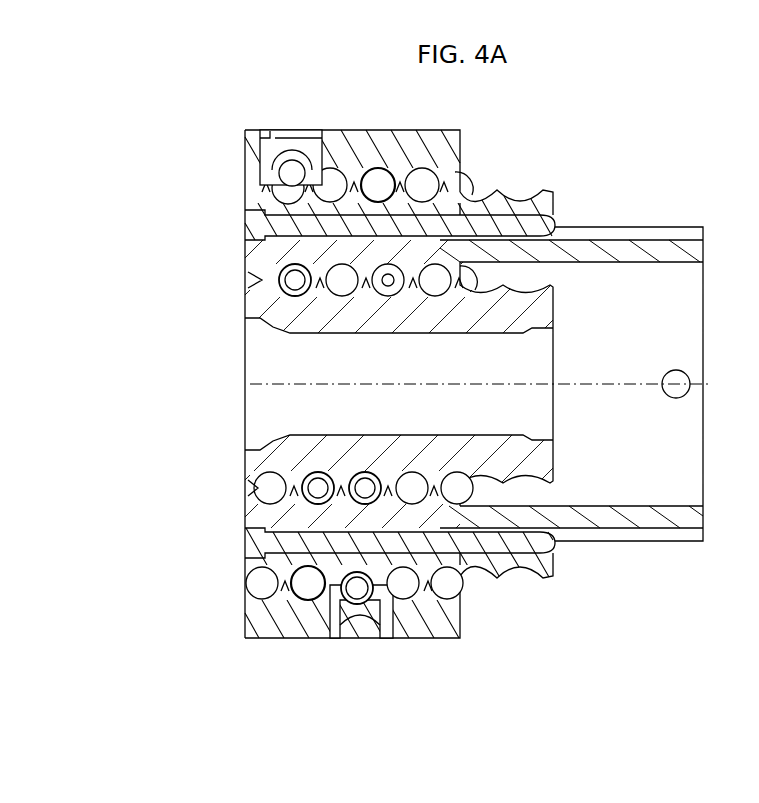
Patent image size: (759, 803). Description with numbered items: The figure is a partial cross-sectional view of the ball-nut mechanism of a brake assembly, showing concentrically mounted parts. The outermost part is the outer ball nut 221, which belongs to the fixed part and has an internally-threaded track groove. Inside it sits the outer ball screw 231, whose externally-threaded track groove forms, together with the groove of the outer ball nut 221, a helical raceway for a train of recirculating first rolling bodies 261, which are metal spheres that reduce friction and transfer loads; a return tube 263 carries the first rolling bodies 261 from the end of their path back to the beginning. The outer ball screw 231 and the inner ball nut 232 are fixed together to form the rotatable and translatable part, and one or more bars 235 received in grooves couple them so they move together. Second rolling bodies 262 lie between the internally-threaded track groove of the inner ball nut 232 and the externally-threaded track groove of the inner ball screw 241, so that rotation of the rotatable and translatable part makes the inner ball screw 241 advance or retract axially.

The outer ball nut 221 is at (447, 153).
The outer ball screw 231 is at (253, 200).
The inner ball nut 232 is at (263, 252).
The inner ball screw 241 is at (260, 455).
The first rolling bodies 261 is at (377, 184).
The second rolling bodies 262 is at (293, 281).
The return tube 263 is at (263, 148).
The bar 235 is at (253, 537).